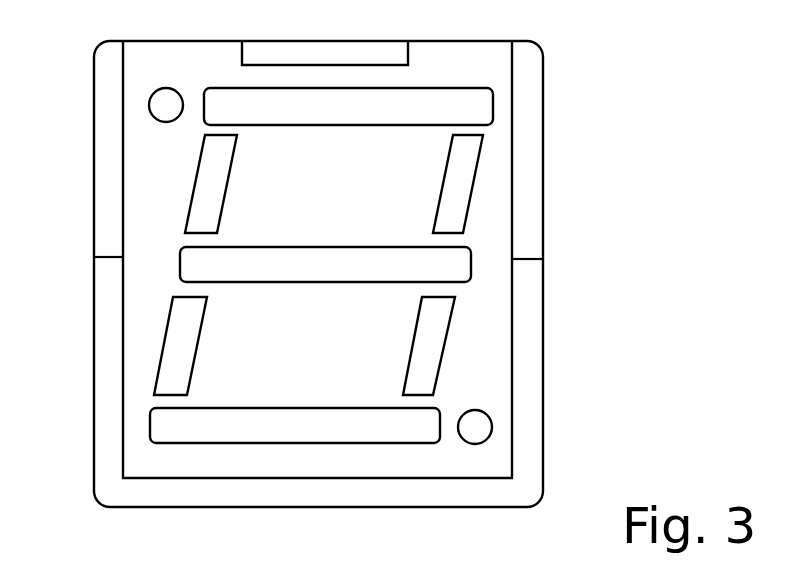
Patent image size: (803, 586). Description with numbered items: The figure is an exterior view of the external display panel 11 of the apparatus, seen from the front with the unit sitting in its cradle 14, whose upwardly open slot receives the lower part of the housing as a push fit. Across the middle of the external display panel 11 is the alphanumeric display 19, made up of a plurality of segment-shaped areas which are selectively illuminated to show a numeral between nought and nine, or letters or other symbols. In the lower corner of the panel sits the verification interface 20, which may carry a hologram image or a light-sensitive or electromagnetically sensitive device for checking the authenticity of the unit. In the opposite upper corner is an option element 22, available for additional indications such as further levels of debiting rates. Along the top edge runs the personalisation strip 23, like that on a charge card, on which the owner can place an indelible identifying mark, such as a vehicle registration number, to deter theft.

The external display panel 11 is at (477, 373).
The cradle 14 is at (525, 318).
The alphanumeric display 19 is at (460, 178).
The verification interface 20 is at (475, 430).
The option element 22 is at (168, 108).
The personalisation strip 23 is at (377, 55).